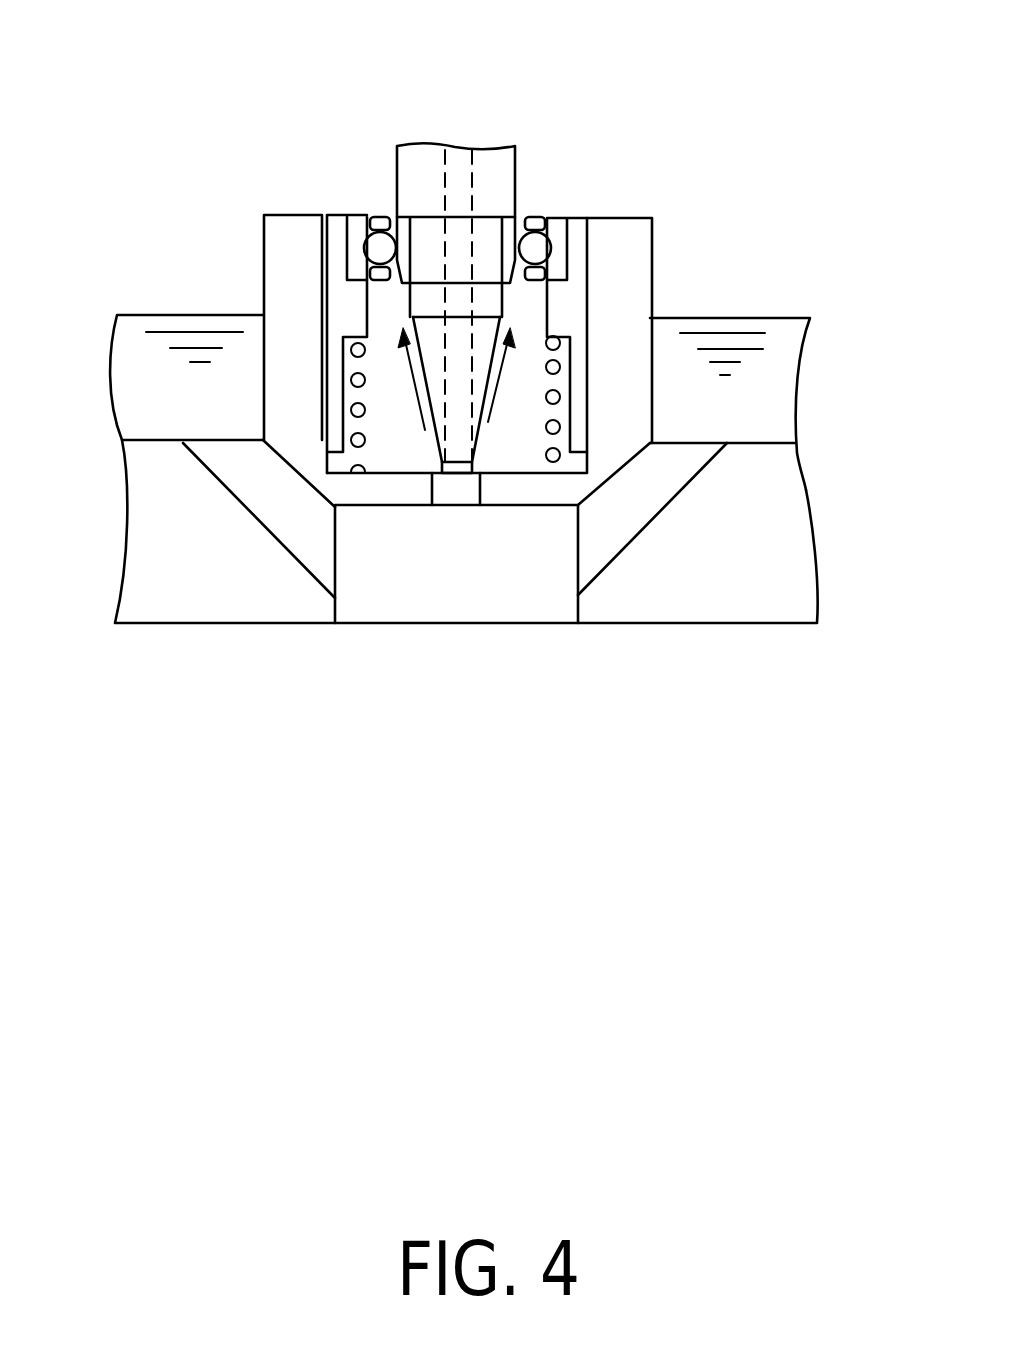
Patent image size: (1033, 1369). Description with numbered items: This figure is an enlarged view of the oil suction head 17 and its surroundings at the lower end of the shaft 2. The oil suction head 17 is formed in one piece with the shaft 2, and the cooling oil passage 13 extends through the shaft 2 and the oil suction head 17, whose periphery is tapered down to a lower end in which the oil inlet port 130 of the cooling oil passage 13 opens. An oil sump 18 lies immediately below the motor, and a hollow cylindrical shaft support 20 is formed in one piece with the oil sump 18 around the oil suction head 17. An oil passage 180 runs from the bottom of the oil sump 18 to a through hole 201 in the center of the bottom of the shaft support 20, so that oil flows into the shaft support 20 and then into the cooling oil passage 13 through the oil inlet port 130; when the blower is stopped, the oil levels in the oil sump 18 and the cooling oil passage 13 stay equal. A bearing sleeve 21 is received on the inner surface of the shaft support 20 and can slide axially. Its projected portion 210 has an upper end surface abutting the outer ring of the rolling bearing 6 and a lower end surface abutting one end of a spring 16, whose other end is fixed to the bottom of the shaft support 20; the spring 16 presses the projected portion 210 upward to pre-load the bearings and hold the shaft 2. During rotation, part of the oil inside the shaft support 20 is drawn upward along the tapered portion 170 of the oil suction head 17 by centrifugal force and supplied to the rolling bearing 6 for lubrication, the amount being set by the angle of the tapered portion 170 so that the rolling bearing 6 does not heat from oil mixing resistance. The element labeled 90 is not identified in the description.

The cooling oil passage 13 is at (497, 165).
The shaft 2 is at (518, 168).
The rolling bearing 6 is at (537, 207).
The shaft support 20 is at (262, 236).
The bearing sleeve 21 is at (587, 215).
The projected portion 210 is at (570, 268).
The oil sump 18 is at (800, 358).
The spring 16 is at (556, 367).
The conical valve body 90 is at (487, 400).
The oil inlet port 130 is at (455, 473).
The through hole 201 is at (480, 488).
The oil suction head 17 is at (430, 443).
The tapered portion 170 is at (422, 385).
The oil passage 180 is at (560, 603).